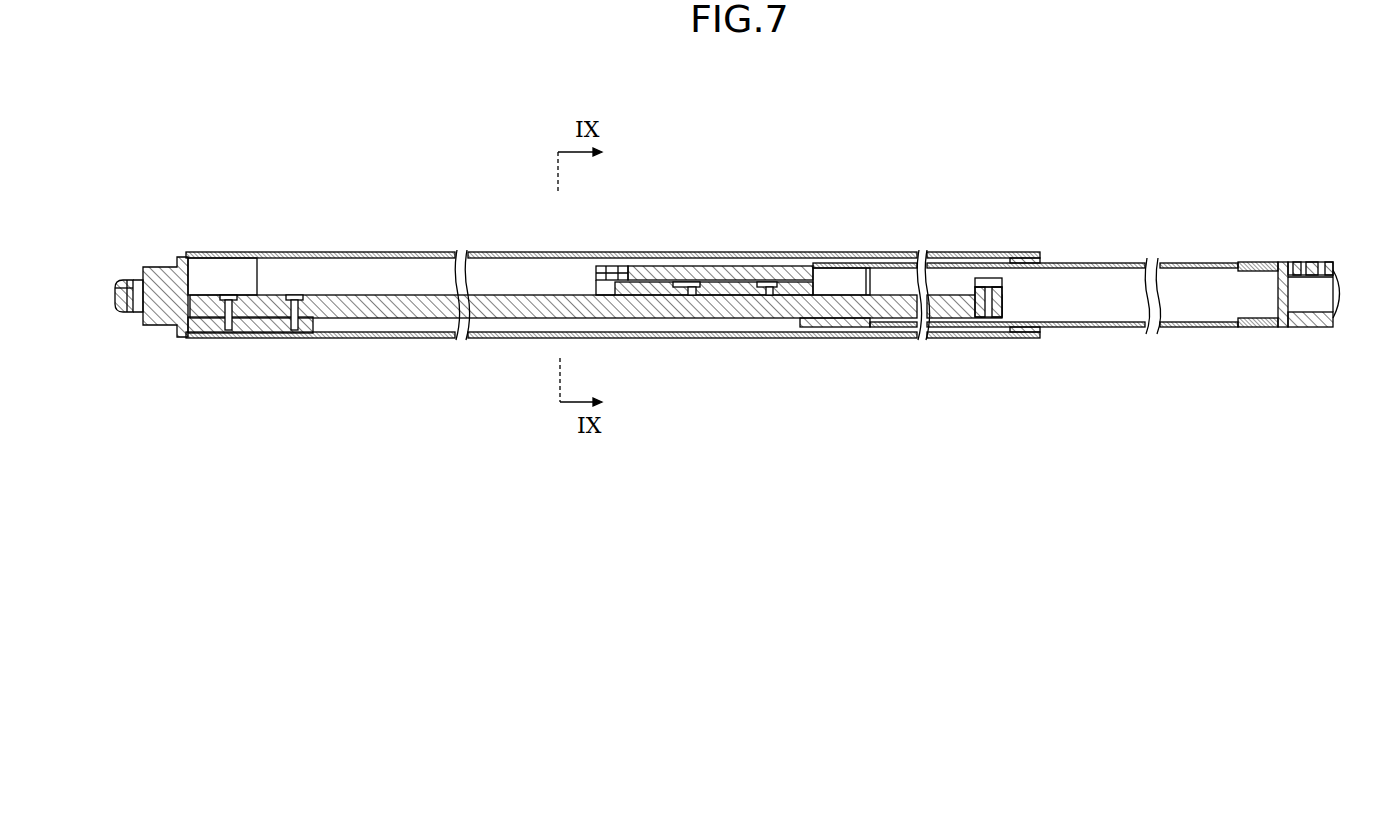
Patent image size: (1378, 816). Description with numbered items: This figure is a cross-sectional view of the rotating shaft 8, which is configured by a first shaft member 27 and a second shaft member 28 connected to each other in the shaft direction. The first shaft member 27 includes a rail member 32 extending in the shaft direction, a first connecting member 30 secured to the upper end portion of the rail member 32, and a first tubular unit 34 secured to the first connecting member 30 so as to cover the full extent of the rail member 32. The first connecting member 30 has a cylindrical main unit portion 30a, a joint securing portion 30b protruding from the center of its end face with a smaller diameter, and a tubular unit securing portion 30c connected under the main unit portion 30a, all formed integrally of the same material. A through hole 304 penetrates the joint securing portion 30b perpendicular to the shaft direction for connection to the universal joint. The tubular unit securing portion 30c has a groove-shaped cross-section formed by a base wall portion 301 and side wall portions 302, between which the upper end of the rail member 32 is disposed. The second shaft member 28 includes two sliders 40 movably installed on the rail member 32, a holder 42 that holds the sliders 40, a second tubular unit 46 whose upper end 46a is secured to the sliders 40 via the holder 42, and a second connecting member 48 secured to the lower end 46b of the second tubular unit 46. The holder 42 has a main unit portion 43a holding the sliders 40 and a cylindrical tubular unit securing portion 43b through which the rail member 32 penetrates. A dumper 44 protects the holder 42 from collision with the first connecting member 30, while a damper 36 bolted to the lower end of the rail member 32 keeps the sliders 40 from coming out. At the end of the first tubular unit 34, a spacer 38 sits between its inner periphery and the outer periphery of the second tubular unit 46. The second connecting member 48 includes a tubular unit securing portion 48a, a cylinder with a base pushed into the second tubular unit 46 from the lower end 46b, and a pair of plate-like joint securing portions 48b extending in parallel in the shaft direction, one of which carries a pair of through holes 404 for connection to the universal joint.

The rotating shaft 8 is at (720, 495).
The first shaft member 27 is at (350, 404).
The second shaft member 28 is at (1172, 402).
The first connecting member 30 is at (267, 444).
The main unit portion 30a is at (152, 327).
The joint securing portion 30b is at (116, 314).
The tubular unit securing portion 30c is at (297, 400).
The base wall portion 301 is at (203, 333).
The side wall portions 302 is at (247, 274).
The through hole 304 is at (126, 280).
The rail member 32 is at (405, 306).
The first tubular unit 34 is at (514, 334).
The damper 36 is at (967, 293).
The spacer 38 is at (1031, 330).
The sliders 40 is at (737, 288).
The holder 42 is at (862, 184).
The main unit portion 43a is at (770, 265).
The tubular unit securing portion 43b is at (830, 285).
The dumper 44 is at (598, 265).
The second tubular unit 46 is at (1082, 262).
The upper end 46a is at (832, 326).
The lower end 46b is at (1255, 262).
The second connecting member 48 is at (1337, 399).
The tubular unit securing portion 48a is at (1248, 328).
The joint securing portions 48b is at (1328, 332).
The through holes 404 is at (1324, 262).